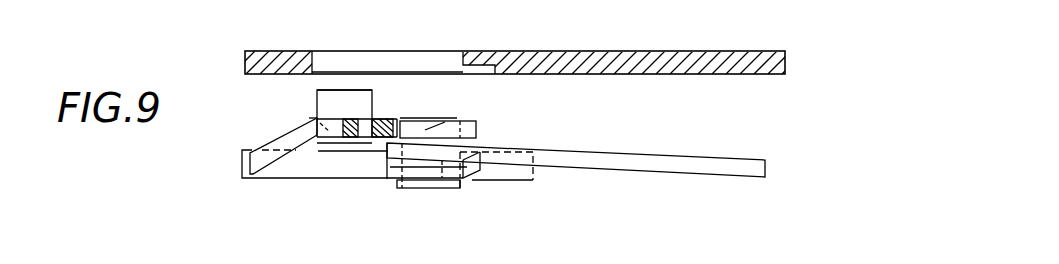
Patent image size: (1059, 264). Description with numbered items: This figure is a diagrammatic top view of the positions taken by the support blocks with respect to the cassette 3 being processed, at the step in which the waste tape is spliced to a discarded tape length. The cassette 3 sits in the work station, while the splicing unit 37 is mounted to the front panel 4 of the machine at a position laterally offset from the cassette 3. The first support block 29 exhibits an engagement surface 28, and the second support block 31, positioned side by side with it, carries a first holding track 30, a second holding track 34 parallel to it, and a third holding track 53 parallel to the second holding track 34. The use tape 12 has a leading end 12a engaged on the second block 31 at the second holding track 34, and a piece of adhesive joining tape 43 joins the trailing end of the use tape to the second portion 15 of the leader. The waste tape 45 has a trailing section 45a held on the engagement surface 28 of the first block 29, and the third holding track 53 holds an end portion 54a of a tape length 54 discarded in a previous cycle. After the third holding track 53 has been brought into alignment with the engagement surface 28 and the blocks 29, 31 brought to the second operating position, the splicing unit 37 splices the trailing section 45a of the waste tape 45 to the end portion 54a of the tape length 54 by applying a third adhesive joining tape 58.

The cassette 3 is at (296, 181).
The front panel 4 is at (715, 62).
The use tape 12 is at (767, 164).
The leading end of the use tape 12a is at (388, 170).
The second portion of the leader 15 is at (392, 182).
The engagement surface 28 is at (316, 108).
The first support block 29 is at (315, 92).
The first holding track 30 is at (442, 200).
The second support block 31 is at (460, 188).
The second holding track 34 is at (497, 118).
The splicing unit 37 is at (387, 118).
The adhesive joining tape 43 is at (351, 119).
The waste tape 45 is at (277, 139).
The trailing section of the waste tape 45a is at (337, 125).
The third holding track 53 is at (460, 117).
The tape length 54 is at (480, 135).
The end portion of the tape length 54a is at (432, 125).
The third adhesive joining tape 58 is at (390, 118).